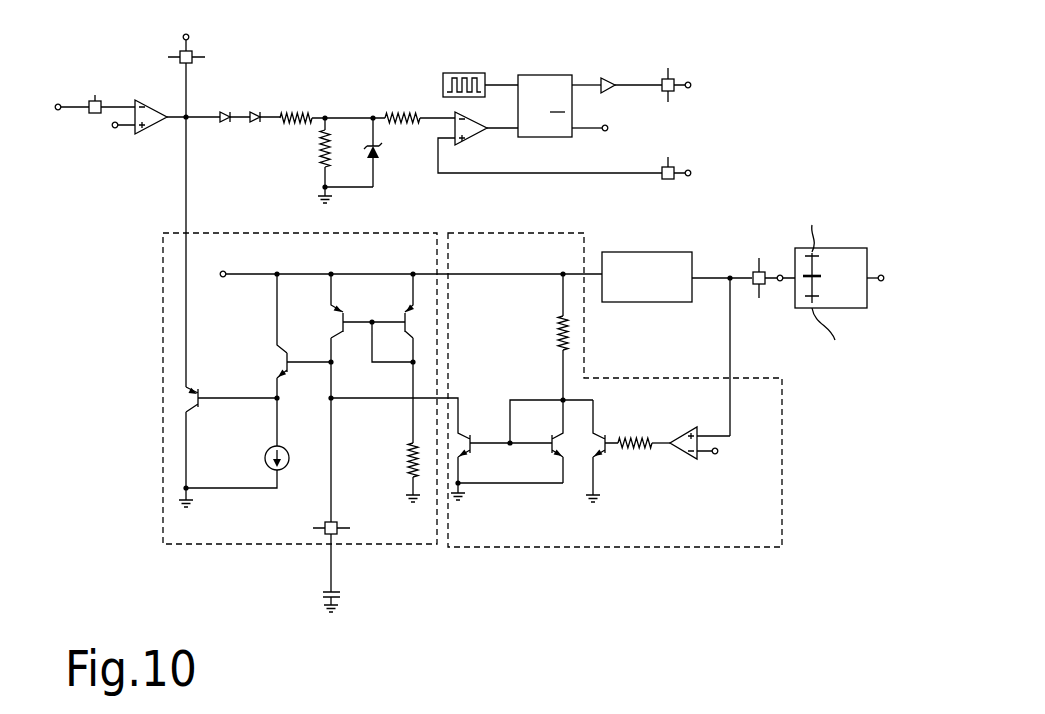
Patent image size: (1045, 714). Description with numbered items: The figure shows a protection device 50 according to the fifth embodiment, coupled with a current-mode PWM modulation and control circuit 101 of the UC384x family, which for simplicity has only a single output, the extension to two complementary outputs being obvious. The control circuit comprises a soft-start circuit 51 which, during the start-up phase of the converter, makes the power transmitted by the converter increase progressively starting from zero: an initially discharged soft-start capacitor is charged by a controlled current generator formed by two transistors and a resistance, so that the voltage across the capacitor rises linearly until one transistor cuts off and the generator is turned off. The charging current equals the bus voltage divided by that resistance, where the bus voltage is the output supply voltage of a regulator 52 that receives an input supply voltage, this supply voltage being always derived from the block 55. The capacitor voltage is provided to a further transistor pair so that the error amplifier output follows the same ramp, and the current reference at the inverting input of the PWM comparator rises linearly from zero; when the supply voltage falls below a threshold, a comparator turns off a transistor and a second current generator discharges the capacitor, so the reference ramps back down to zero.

The PWM modulation and control circuit 101 is at (118, 60).
The protection device 50 is at (146, 462).
The soft-start circuit 51 is at (162, 356).
The regulator 52 is at (635, 290).
The block 55 is at (867, 298).